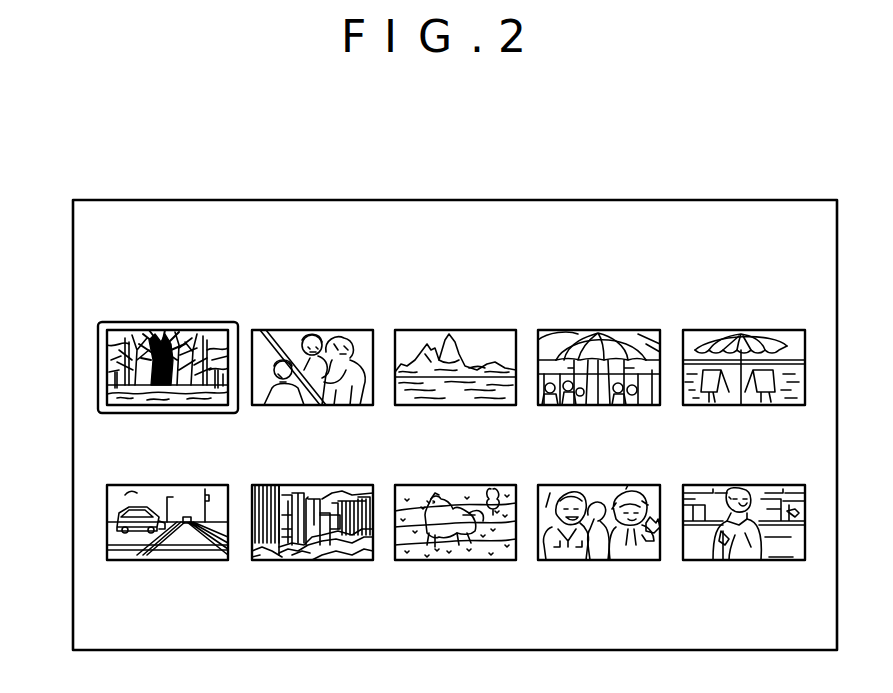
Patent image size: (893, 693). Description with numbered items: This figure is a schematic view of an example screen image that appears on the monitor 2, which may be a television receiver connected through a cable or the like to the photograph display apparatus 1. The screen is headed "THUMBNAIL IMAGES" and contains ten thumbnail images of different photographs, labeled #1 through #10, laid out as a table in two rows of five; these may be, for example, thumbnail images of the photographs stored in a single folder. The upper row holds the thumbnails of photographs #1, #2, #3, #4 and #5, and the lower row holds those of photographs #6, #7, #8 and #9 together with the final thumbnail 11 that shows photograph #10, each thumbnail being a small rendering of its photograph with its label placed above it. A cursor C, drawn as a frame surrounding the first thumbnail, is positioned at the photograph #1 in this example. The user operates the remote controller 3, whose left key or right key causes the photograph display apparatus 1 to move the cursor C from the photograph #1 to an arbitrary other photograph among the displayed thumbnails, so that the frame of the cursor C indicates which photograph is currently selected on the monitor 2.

The monitor 2 is at (457, 200).
The cursor C is at (98, 357).
The photograph display apparatus 1 is at (175, 330).
The remote controller 3 is at (319, 330).
The thumbnail image #3 4 is at (464, 330).
The thumbnail image #4 5 is at (606, 330).
The thumbnail image #5 6 is at (751, 330).
The thumbnail image #6 7 is at (175, 485).
The thumbnail image #7 8 is at (319, 485).
The thumbnail image #8 9 is at (464, 485).
The thumbnail image #9 10 is at (606, 485).
The thumbnail image #10 11 is at (751, 485).